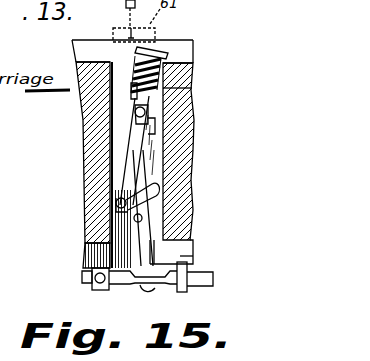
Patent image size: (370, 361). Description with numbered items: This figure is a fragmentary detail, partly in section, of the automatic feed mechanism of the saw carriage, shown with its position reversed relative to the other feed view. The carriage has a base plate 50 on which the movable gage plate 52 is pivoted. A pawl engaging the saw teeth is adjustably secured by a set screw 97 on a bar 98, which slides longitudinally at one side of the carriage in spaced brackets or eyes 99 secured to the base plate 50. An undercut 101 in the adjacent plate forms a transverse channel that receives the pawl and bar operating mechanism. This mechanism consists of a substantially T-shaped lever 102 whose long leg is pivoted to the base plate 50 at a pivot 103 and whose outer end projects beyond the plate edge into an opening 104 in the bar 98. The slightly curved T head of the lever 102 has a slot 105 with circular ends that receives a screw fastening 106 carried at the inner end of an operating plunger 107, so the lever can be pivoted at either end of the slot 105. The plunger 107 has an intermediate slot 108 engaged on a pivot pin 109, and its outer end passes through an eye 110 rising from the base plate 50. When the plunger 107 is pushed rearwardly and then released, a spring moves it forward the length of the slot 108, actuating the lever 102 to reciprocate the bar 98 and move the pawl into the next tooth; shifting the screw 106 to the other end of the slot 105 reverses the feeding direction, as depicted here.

The base plate 50 is at (88, 50).
The gage plate 52 is at (92, 157).
The set screw 97 is at (90, 286).
The bar 98 is at (213, 279).
The brackets or eyes 99 is at (178, 290).
The undercut 101 is at (166, 168).
The T-shaped lever 102 is at (143, 253).
The pivot 103 is at (142, 217).
The opening 104 is at (129, 286).
The slot 105 is at (100, 243).
The screw fastening 106 is at (116, 211).
The operating plunger 107 is at (118, 181).
The intermediate slot 108 is at (150, 131).
The pivot pin 109 is at (146, 113).
The eye 110 is at (165, 89).